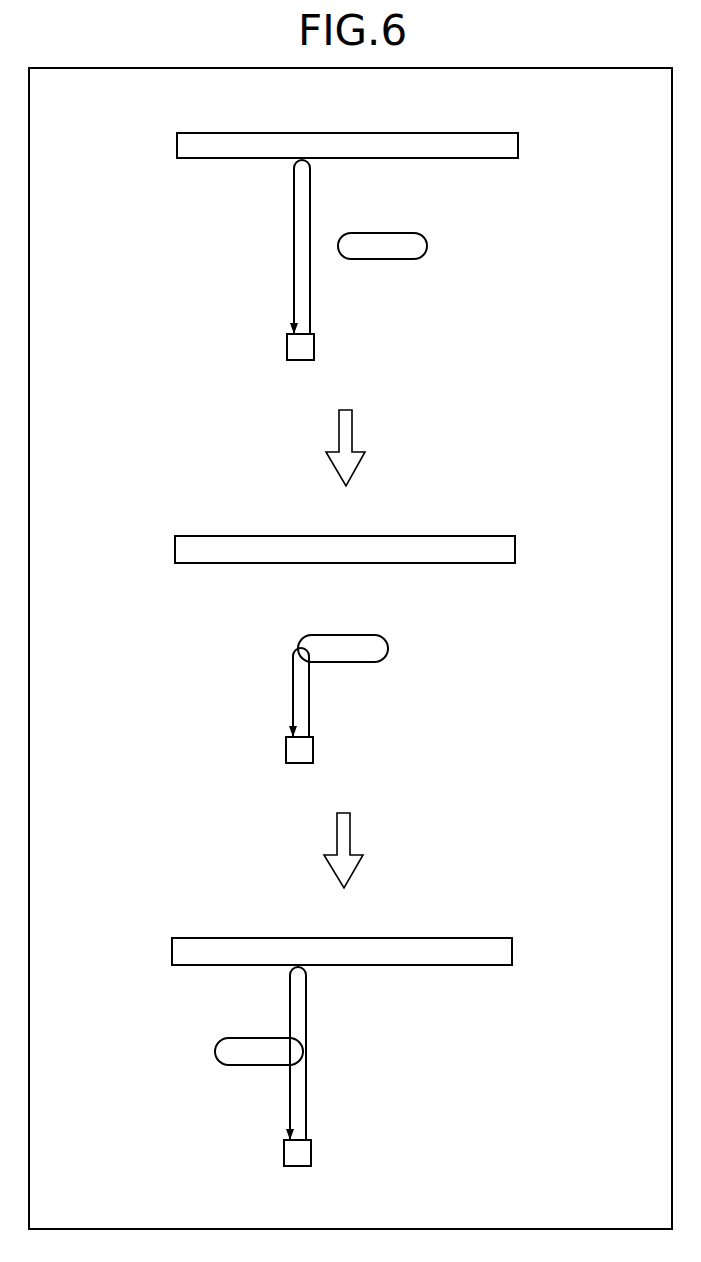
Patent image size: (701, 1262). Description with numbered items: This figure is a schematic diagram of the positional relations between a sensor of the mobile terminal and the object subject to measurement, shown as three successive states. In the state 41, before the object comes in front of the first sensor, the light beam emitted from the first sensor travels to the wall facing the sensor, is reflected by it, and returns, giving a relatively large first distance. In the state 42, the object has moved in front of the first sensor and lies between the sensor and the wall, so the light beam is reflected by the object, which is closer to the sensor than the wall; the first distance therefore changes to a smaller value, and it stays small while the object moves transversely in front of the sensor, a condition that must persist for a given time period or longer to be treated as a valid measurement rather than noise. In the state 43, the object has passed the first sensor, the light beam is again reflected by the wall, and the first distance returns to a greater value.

The state 41 is at (178, 231).
The state 42 is at (176, 632).
The state 43 is at (174, 1035).